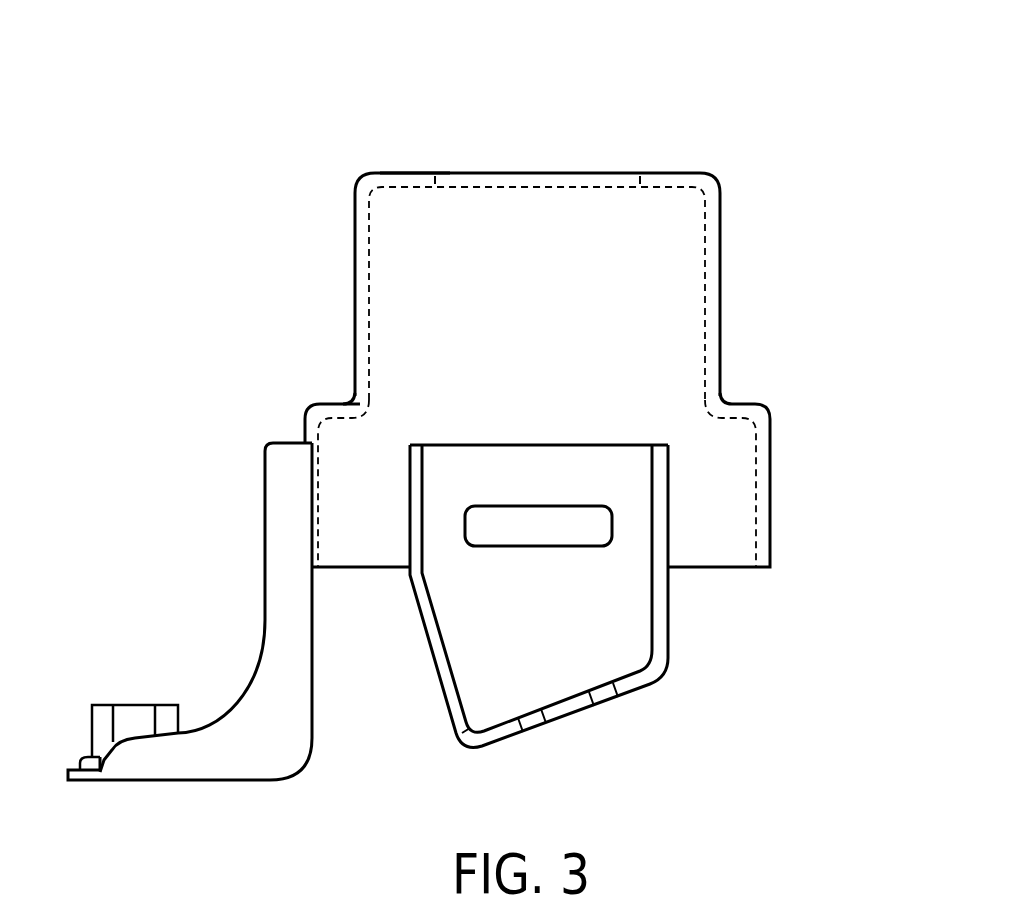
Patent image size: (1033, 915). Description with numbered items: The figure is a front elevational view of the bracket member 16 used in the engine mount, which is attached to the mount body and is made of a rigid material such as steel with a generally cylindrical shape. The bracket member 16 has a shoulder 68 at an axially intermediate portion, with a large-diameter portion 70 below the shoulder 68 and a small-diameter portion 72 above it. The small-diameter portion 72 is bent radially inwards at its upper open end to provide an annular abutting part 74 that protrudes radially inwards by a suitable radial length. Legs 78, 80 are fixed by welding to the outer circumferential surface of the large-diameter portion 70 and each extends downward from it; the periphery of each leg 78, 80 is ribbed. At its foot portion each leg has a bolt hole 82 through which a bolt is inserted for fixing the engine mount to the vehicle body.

The bracket member 16 is at (592, 140).
The shoulder 68 is at (333, 412).
The large-diameter portion 70 is at (735, 462).
The small-diameter portion 72 is at (665, 311).
The annular abutting part 74 is at (410, 178).
The leg 78 is at (242, 595).
The leg 80 is at (682, 628).
The bolt hole 82 is at (585, 712).